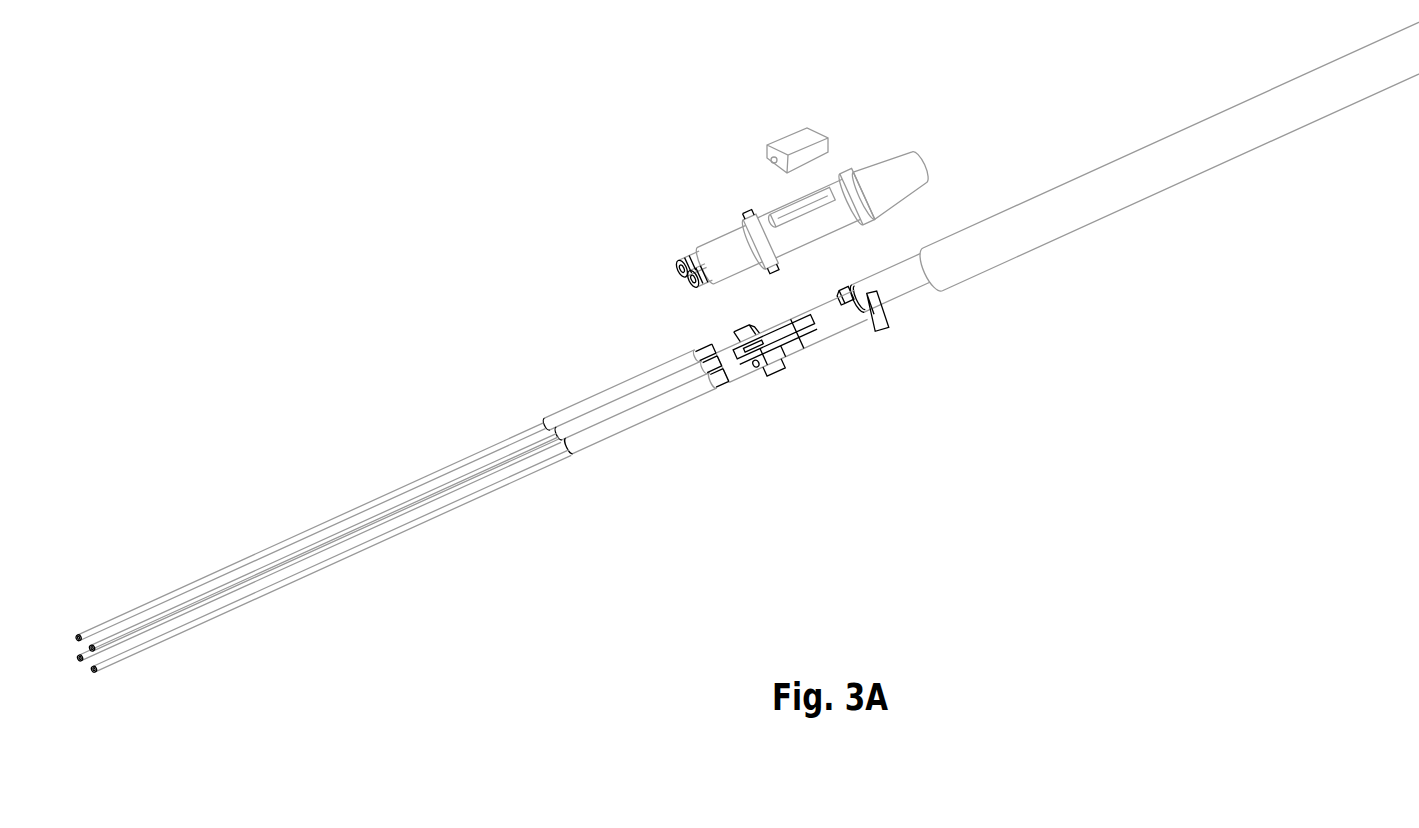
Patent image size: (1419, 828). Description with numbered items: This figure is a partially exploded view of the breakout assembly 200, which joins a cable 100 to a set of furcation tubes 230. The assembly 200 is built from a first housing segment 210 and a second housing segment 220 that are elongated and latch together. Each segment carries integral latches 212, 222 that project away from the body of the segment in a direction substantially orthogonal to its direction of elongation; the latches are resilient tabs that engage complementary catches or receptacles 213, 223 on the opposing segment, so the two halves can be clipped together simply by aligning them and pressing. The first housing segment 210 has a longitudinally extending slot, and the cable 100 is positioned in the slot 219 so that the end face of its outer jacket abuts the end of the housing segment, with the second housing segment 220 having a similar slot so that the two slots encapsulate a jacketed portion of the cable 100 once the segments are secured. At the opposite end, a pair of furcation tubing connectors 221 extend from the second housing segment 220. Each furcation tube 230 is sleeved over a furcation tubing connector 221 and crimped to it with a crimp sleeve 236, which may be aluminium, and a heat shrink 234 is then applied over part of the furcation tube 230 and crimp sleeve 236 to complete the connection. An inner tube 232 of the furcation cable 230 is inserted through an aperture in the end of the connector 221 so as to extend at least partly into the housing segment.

The cable 100 is at (1130, 183).
The breakout assembly 200 is at (510, 162).
The first housing segment 210 is at (915, 305).
The latch 212 is at (735, 330).
The catch or receptacle 213 is at (772, 367).
The slot 219 is at (850, 307).
The second housing segment 220 is at (913, 177).
The furcation tubing connector 221 is at (690, 257).
The latch 222 is at (767, 273).
The catch or receptacle 223 is at (853, 212).
The furcation tube 230 is at (392, 492).
The inner tube 232 is at (752, 352).
The heat shrink 234 is at (607, 390).
The crimp sleeve 236 is at (717, 390).